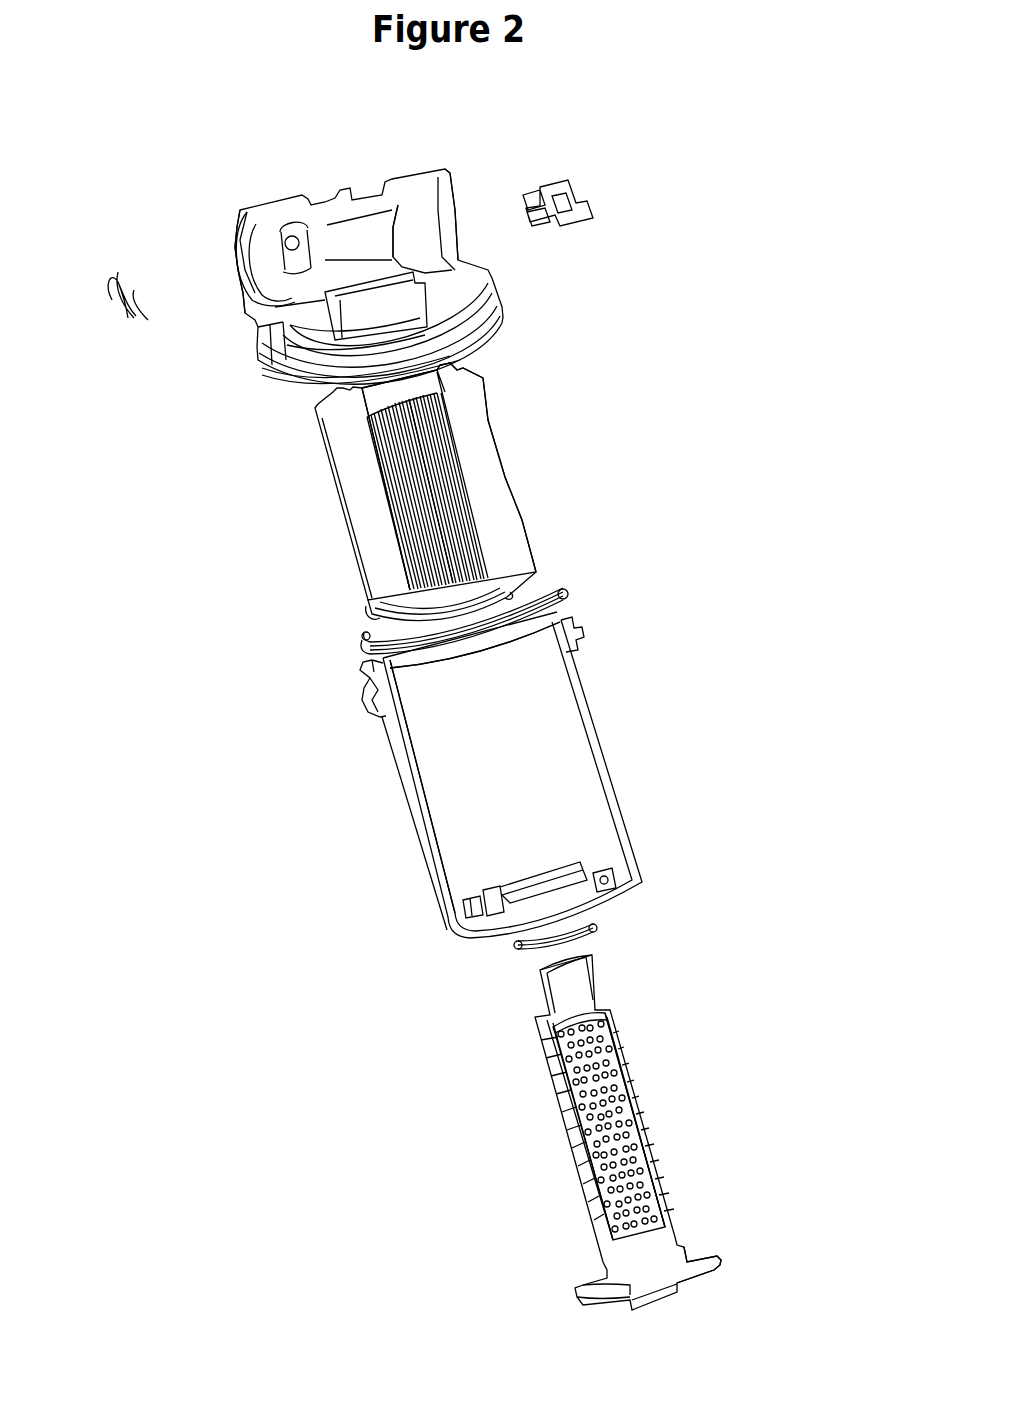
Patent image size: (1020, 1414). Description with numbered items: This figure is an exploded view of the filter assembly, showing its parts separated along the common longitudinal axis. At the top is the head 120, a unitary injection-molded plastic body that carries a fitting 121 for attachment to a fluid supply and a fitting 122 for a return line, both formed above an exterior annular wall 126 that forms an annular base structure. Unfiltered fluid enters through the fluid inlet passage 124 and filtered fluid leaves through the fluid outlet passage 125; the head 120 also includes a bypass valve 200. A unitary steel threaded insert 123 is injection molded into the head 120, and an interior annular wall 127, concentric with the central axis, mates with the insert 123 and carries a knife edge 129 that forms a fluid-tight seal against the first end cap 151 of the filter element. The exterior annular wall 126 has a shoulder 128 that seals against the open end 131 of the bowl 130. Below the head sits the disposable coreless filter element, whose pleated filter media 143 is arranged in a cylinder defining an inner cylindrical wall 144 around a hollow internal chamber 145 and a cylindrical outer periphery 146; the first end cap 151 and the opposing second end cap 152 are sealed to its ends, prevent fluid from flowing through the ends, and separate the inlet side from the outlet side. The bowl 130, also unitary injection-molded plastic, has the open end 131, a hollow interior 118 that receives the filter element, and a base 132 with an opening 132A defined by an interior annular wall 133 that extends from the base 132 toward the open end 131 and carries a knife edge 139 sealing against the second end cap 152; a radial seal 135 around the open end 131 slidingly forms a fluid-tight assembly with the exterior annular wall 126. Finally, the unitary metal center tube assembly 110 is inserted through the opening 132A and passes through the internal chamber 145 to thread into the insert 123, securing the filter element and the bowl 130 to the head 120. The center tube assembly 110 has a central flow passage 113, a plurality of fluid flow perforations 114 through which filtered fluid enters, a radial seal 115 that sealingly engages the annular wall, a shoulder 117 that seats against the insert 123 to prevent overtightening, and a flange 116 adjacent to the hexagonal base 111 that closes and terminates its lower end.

The center tube assembly 110 is at (648, 1107).
The base 111 is at (650, 1292).
The central flow passage 113 is at (628, 1180).
The fluid flow perforations 114 is at (622, 1050).
The radial seal 115 is at (510, 952).
The flange 116 is at (727, 1258).
The shoulder 117 is at (607, 996).
The hollow interior 118 is at (527, 826).
The head 120 is at (450, 172).
The fitting 121 is at (250, 228).
The fitting 122 is at (445, 212).
The threaded insert 123 is at (335, 307).
The fluid inlet passage 124 is at (262, 260).
The fluid outlet passage 125 is at (425, 242).
The exterior annular wall 126 is at (275, 367).
The interior annular wall 127 is at (330, 331).
The shoulder 128 is at (266, 386).
The knife edge 129 is at (330, 352).
The bowl 130 is at (600, 760).
The open end 131 is at (492, 675).
The base 132 is at (445, 908).
The opening 132A is at (545, 910).
The interior annular wall 133 is at (600, 885).
The radial seal 135 is at (347, 657).
The knife edge 139 is at (488, 888).
The filter media 143 is at (457, 418).
The inner cylindrical wall 144 is at (388, 496).
The hollow internal chamber 145 is at (448, 607).
The outer periphery 146 is at (505, 465).
The first end cap 151 is at (480, 365).
The second end cap 152 is at (512, 575).
The bypass valve 200 is at (570, 190).